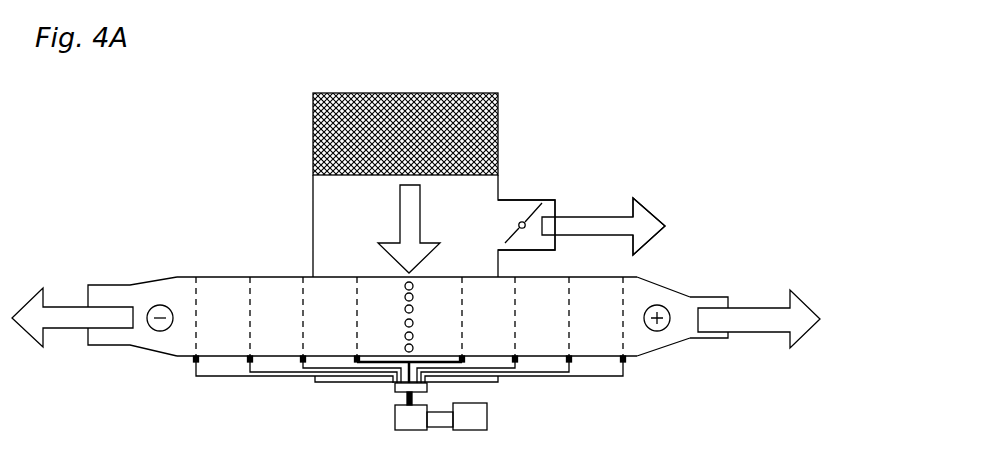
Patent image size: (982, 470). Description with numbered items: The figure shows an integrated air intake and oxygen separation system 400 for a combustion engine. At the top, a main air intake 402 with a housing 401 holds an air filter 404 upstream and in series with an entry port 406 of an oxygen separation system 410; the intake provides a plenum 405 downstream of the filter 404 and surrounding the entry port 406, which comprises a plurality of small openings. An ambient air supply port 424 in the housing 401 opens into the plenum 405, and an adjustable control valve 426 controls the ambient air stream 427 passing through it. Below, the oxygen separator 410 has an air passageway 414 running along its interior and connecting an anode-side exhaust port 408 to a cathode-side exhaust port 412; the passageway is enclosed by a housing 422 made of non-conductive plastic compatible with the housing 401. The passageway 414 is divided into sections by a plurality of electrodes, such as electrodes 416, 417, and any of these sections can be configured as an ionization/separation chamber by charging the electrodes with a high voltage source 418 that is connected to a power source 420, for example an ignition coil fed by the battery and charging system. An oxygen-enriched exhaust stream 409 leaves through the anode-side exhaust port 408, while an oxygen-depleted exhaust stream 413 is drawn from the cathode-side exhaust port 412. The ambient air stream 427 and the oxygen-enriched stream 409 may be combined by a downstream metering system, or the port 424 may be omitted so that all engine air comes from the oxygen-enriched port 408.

The integrated air intake and oxygen separation system 400 is at (277, 58).
The housing 401 is at (500, 180).
The main air intake 402 is at (308, 141).
The air filter 404 is at (455, 107).
The plenum 405 is at (335, 212).
The entry port 406 is at (423, 280).
The anode-side exhaust port 408 is at (728, 305).
The oxygen-enriched exhaust stream 409 is at (747, 323).
The oxygen separation system 410 is at (258, 265).
The cathode-side exhaust port 412 is at (82, 336).
The oxygen-depleted exhaust stream 413 is at (57, 310).
The air passageway 414 is at (261, 343).
The electrode 416 is at (316, 343).
The electrode 417 is at (362, 340).
The high voltage source 418 is at (412, 425).
The power source 420 is at (480, 420).
The housing 422 is at (652, 350).
The ambient air supply port 424 is at (558, 207).
The adjustable control valve 426 is at (532, 221).
The ambient air stream 427 is at (641, 239).